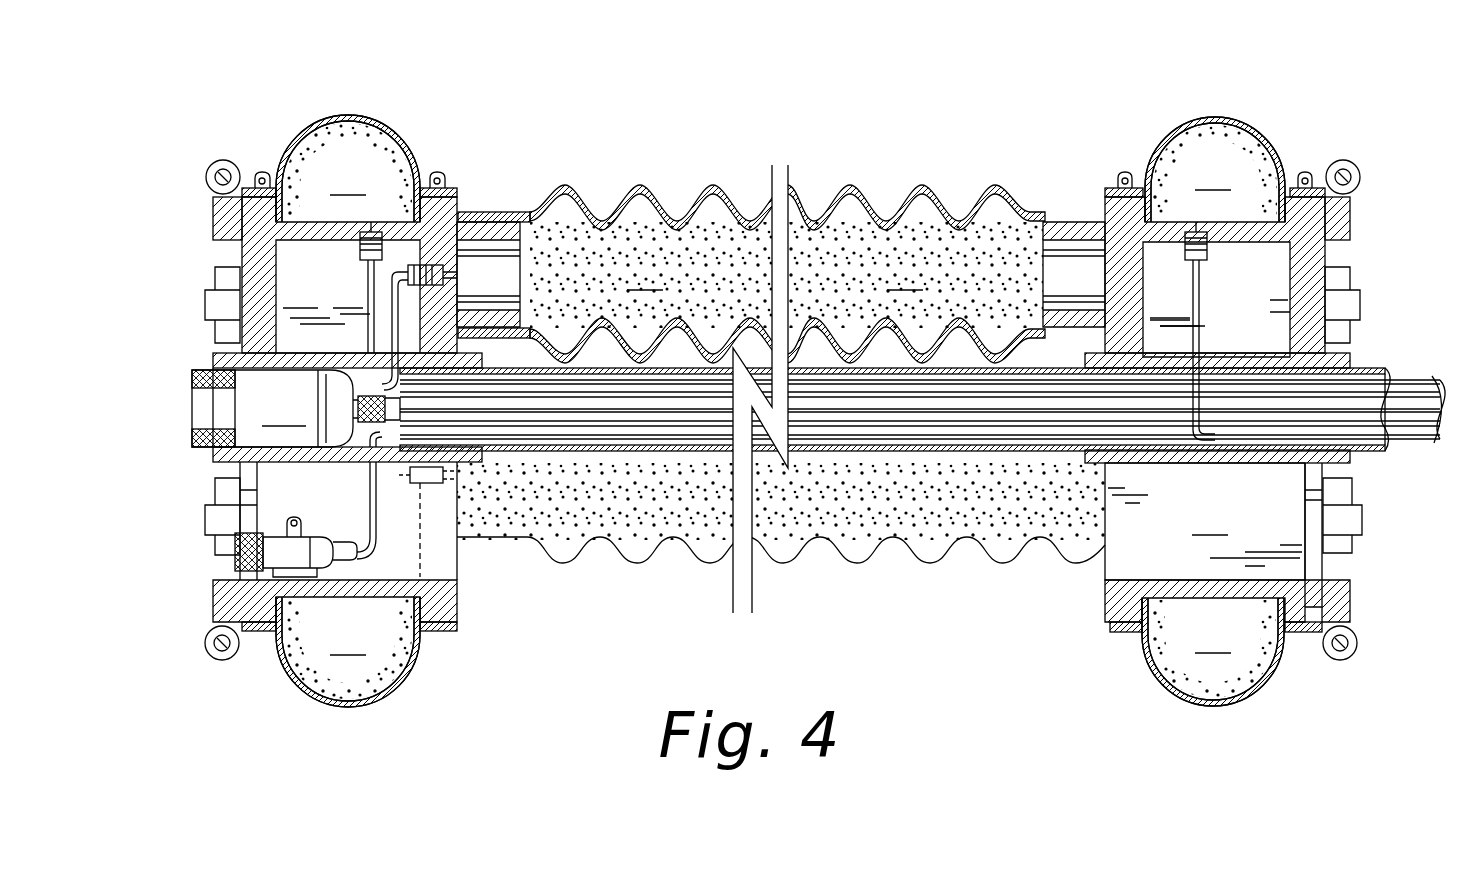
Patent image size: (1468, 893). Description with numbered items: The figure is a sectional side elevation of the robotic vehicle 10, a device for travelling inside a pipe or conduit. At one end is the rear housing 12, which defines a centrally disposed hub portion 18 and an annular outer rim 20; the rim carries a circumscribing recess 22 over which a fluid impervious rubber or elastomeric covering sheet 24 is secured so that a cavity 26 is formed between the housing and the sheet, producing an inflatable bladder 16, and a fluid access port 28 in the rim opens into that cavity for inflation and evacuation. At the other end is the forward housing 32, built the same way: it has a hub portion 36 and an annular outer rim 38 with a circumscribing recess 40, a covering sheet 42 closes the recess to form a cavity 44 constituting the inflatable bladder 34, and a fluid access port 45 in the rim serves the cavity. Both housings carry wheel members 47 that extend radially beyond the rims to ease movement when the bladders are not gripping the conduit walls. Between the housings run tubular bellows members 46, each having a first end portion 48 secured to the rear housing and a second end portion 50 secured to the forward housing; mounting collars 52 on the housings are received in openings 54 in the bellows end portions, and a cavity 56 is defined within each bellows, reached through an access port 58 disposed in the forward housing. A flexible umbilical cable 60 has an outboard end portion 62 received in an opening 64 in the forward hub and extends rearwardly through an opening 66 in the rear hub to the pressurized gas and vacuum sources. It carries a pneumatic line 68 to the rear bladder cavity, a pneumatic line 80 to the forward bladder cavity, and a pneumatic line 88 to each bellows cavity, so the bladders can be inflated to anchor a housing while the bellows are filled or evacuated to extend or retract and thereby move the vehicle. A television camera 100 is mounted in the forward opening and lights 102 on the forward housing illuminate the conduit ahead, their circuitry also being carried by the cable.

The robotic vehicle 10 is at (957, 60).
The rear housing 12 is at (1205, 521).
The inflatable bladder 16 is at (1218, 110).
The hub portion 18 is at (1380, 368).
The annular outer rim 20 is at (1340, 228).
The circumscribing recess 22 is at (1268, 170).
The covering sheet 24 is at (1183, 120).
The cavity 26 is at (1213, 411).
The fluid access port 28 is at (1207, 250).
The forward housing 32 is at (314, 301).
The inflatable bladder 34 is at (346, 112).
The hub portion 36 is at (215, 460).
The annular outer rim 38 is at (215, 203).
The circumscribing recess 40 is at (300, 195).
The covering sheet 42 is at (398, 120).
The cavity 44 is at (348, 411).
The fluid access port 45 is at (360, 250).
The tubular bellows members 46 is at (738, 188).
The wheel members 47 is at (210, 165).
The first end portion 48 is at (1085, 230).
The second end portion 50 is at (518, 212).
The mounting collars 52 is at (517, 270).
The openings 54 is at (452, 215).
The cavity 56 is at (786, 275).
The access port 58 is at (372, 340).
The flexible umbilical cable 60 is at (1420, 388).
The outboard end portion 62 is at (470, 465).
The opening 64 is at (492, 365).
The opening 66 is at (1350, 455).
The pneumatic line 68 is at (1200, 330).
The pneumatic line 80 is at (300, 280).
The pneumatic line 88 is at (275, 353).
The television camera 100 is at (296, 408).
The lights 102 is at (235, 560).